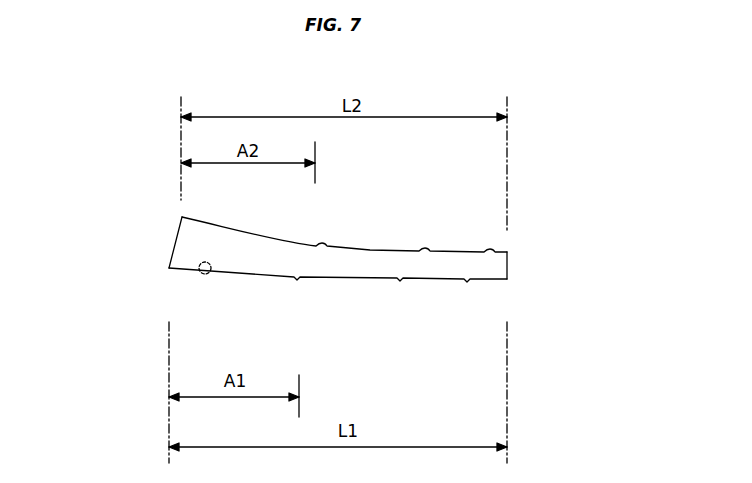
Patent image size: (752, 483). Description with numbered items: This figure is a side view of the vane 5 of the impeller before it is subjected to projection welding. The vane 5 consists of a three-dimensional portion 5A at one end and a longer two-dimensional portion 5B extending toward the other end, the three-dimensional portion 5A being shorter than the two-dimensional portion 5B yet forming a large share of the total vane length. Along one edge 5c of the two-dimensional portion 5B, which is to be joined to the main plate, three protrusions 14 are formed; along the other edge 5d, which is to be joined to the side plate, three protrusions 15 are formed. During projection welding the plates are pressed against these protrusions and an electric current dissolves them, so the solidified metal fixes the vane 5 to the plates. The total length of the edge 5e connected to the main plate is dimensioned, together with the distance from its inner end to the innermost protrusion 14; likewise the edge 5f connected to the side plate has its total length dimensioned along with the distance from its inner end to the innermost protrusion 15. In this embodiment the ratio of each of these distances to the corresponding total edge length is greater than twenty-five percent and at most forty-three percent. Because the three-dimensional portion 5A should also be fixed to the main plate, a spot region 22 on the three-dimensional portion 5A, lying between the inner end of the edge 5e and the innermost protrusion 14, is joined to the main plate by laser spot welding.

The vane 5 is at (346, 236).
The three-dimensional portion 5A is at (203, 247).
The two-dimensional portion 5B is at (482, 270).
The one edge 5c is at (430, 281).
The other edge 5d is at (458, 252).
The edge 5e is at (352, 280).
The edge 5f is at (373, 250).
The protrusion 14 is at (297, 281).
The protrusion 15 is at (322, 243).
The spot region 22 is at (205, 274).